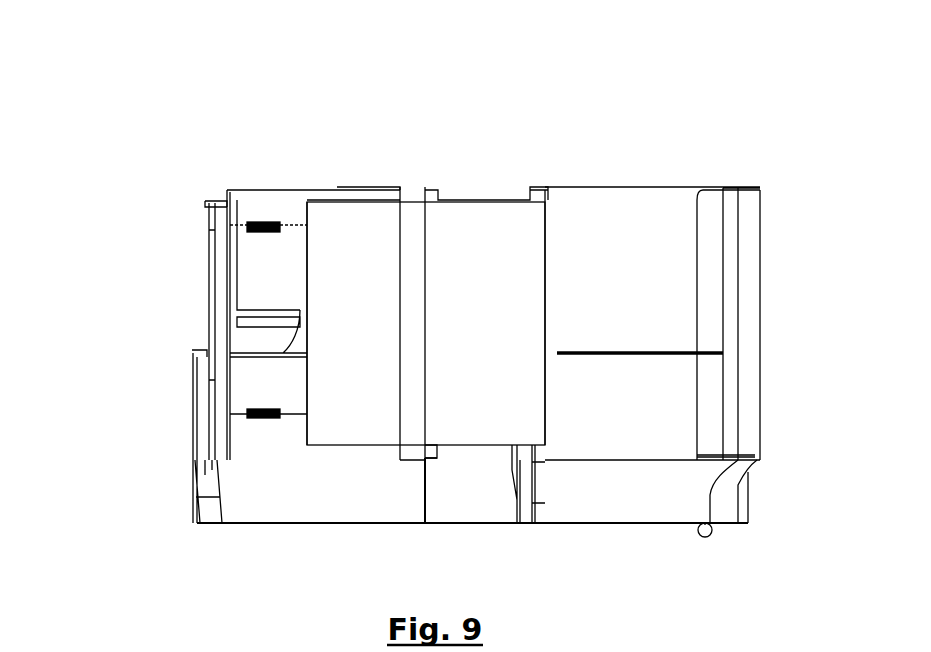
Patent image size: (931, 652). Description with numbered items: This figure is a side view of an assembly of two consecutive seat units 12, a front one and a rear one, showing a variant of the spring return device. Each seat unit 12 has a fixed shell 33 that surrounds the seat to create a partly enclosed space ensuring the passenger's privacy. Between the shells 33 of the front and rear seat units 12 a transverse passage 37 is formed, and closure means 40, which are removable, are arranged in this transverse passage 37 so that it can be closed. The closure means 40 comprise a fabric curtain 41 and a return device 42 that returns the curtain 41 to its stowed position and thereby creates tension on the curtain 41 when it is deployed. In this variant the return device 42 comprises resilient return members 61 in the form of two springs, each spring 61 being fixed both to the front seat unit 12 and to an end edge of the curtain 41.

The seat unit 12 is at (220, 162).
The fixed shell 33 is at (250, 278).
The transverse passage 37 is at (452, 480).
The closure means 40 is at (496, 312).
The curtain 41 is at (451, 237).
The return device 42 is at (260, 438).
The resilient return member 61 is at (263, 225).